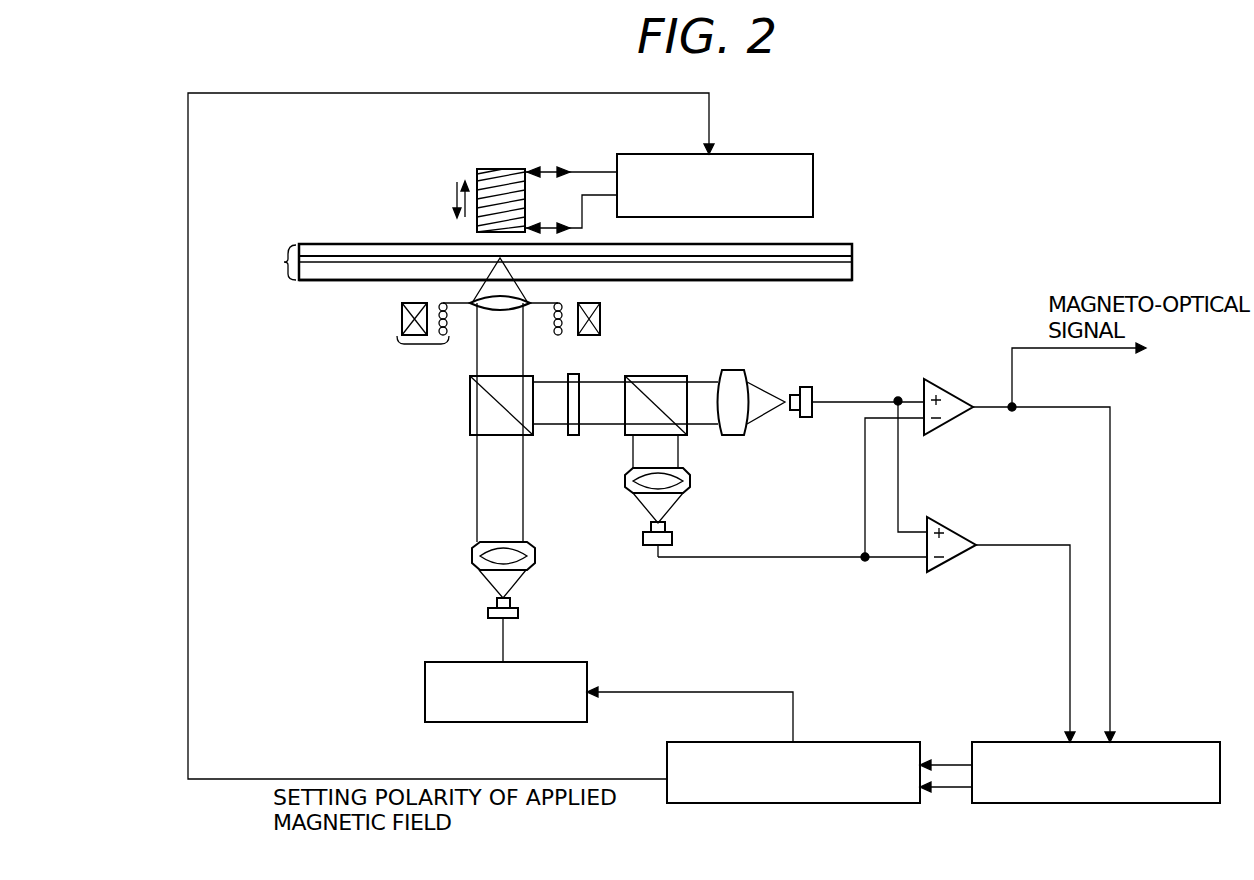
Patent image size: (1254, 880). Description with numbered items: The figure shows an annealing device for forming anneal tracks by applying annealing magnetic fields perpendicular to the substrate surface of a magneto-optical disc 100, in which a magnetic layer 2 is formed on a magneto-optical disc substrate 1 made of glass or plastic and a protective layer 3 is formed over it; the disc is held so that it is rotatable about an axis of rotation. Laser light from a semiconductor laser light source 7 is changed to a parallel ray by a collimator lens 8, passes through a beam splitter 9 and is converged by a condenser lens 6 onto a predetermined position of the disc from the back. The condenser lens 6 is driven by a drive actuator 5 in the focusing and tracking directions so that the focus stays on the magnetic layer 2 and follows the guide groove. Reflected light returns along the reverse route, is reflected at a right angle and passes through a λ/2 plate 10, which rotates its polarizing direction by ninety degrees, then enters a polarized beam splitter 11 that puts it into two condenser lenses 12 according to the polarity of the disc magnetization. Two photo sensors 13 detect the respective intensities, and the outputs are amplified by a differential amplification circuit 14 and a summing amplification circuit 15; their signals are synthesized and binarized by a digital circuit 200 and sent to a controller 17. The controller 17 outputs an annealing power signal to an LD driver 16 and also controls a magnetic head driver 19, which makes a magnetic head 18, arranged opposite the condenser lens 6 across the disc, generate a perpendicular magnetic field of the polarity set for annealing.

The magneto-optical disc substrate 1 is at (853, 270).
The magnetic layer 2 is at (853, 259).
The protective layer 3 is at (853, 249).
The magneto-optical disc 100 is at (549, 262).
The drive actuator 5 is at (422, 344).
The condenser lens 6 is at (530, 300).
The semiconductor laser light source 7 is at (488, 613).
The collimator lens 8 is at (472, 553).
The beam splitter 9 is at (470, 404).
The λ/2 plate 10 is at (573, 437).
The polarized beam splitter 11 is at (676, 376).
The condenser lenses 12 is at (733, 370).
The photo sensors 13 is at (806, 387).
The differential amplification circuit 14 is at (951, 390).
The summing amplification circuit 15 is at (951, 528).
The LD driver 16 is at (572, 662).
The controller 17 is at (886, 742).
The magnetic head 18 is at (487, 169).
The magnetic head driver 19 is at (797, 154).
The digital circuit 200 is at (1187, 742).